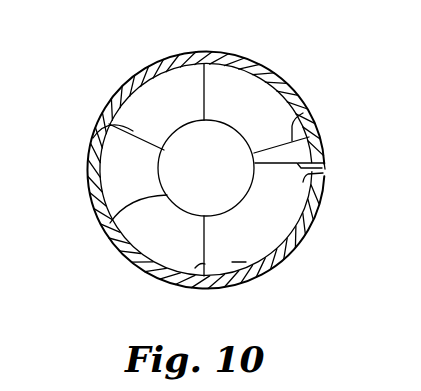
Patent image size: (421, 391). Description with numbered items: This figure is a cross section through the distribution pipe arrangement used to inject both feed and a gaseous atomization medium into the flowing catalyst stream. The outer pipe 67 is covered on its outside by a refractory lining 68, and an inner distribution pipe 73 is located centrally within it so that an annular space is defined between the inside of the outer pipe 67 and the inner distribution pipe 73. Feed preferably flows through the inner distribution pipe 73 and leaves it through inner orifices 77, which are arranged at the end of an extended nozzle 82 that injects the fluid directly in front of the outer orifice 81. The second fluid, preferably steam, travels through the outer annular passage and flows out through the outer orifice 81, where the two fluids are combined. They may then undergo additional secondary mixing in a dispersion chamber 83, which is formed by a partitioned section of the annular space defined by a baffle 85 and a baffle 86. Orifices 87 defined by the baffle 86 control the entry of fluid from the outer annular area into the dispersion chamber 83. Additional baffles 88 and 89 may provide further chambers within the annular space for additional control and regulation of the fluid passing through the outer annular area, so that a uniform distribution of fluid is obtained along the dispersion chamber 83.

The refractory lining 68 is at (227, 52).
The outer pipe 67 is at (87, 185).
The baffle 88 is at (205, 100).
The orifices 87 is at (204, 248).
The baffle 89 is at (95, 137).
The inner distribution pipe 73 is at (122, 217).
The baffle 85 is at (303, 113).
The extended nozzle 82 is at (270, 173).
The inner orifices 77 is at (326, 165).
The outer orifices 81 is at (352, 166).
The baffle 86 is at (205, 264).
The dispersion chamber 83 is at (238, 250).